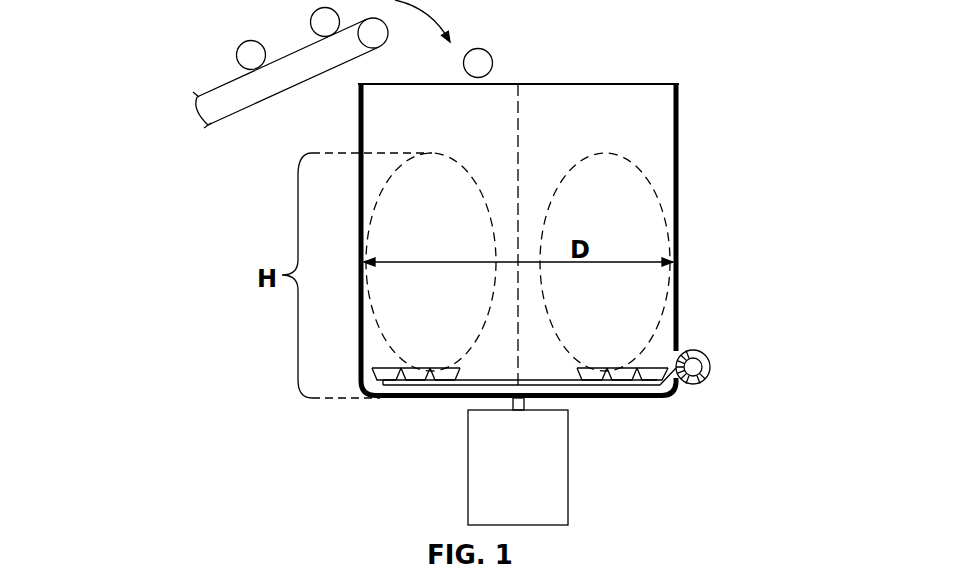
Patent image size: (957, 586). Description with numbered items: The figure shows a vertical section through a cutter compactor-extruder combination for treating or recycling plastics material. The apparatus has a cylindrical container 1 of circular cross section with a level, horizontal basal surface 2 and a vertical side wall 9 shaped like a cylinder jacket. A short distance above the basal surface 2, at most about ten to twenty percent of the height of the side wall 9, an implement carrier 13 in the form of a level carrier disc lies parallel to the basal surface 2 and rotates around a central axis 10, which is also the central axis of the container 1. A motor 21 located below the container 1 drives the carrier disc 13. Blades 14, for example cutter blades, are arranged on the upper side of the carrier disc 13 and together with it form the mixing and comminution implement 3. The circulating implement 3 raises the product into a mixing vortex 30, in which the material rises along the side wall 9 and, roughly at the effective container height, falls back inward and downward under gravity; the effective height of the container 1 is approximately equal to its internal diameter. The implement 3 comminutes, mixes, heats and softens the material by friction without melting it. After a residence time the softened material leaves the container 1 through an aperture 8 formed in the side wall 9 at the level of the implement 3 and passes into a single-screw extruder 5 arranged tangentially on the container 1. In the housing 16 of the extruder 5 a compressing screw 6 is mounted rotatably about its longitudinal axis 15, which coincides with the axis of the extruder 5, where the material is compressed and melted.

The container 1 is at (699, 60).
The basal surface 2 is at (442, 400).
The mixing and/or comminution implement 3 is at (468, 366).
The extruder 5 is at (690, 340).
The screw 6 is at (684, 388).
The aperture 8 is at (668, 357).
The side wall 9 is at (679, 182).
The central axis 10 is at (518, 123).
The implement carrier 13 is at (603, 389).
The blades 14 is at (383, 376).
The longitudinal axis 15 is at (710, 361).
The housing 16 is at (700, 385).
The motor 21 is at (473, 468).
The mixing vortex 30 is at (432, 152).